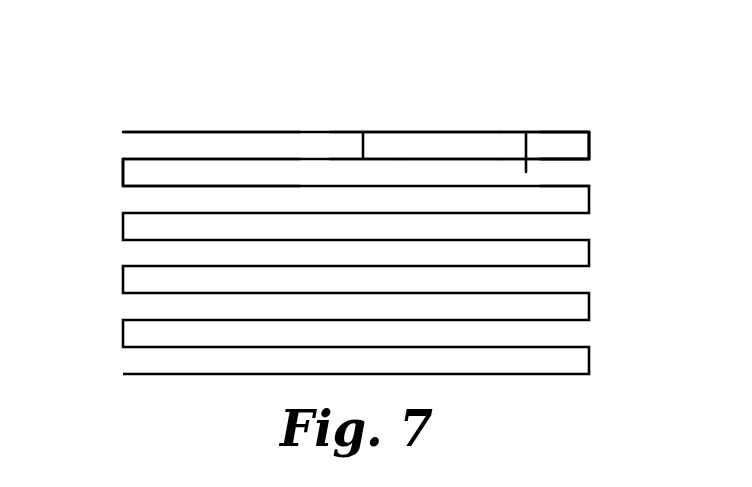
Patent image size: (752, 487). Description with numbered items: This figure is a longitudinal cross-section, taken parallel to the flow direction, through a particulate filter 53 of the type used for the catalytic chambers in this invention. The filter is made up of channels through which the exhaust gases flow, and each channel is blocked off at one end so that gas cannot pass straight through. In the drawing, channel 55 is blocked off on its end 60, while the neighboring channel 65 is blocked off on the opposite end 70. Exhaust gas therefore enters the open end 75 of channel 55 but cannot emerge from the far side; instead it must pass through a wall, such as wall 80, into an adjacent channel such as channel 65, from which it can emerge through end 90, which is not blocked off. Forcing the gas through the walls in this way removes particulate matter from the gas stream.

The particulate filter 53 is at (297, 95).
The channel 55 is at (431, 145).
The end 60 is at (590, 143).
The channel 65 is at (526, 172).
The end 70 is at (120, 176).
The end 75 is at (127, 145).
The wall 80 is at (363, 158).
The end 90 is at (590, 172).